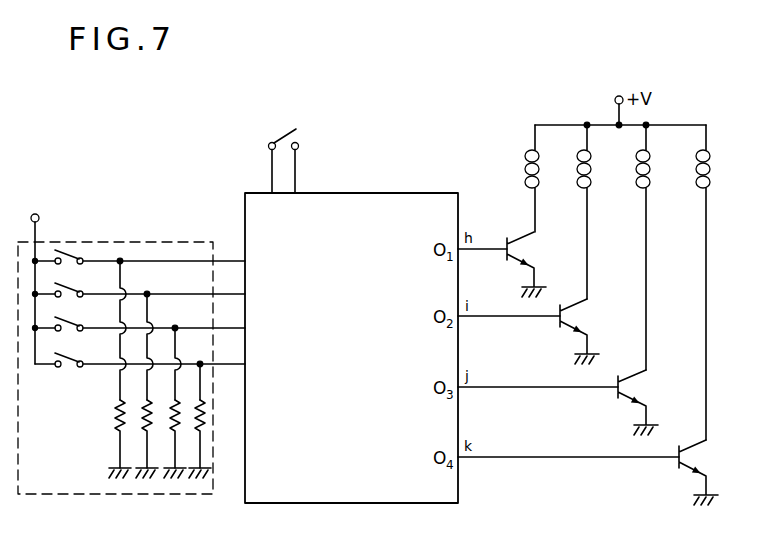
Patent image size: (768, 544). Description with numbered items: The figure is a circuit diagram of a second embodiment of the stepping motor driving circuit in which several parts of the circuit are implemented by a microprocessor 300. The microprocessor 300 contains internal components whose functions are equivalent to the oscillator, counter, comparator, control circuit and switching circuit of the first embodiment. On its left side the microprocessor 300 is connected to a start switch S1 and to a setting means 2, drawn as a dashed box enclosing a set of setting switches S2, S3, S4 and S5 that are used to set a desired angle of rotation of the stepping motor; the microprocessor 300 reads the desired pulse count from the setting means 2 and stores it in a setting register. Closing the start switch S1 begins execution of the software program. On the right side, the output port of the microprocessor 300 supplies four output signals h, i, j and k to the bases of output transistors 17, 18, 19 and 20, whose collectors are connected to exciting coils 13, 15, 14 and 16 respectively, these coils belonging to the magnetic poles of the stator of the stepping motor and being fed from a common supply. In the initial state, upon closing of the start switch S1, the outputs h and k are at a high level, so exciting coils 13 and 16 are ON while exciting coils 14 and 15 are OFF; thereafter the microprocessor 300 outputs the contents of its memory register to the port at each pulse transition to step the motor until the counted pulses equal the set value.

The setting means 2 is at (108, 243).
The microprocessor 300 is at (383, 196).
The exciting coil 13 is at (527, 151).
The exciting coil 14 is at (581, 151).
The exciting coil 15 is at (639, 151).
The exciting coil 16 is at (702, 151).
The output transistor 17 is at (520, 238).
The output transistor 18 is at (574, 305).
The output transistor 19 is at (632, 376).
The output transistor 20 is at (692, 446).
The start switch S1 is at (282, 120).
The setting switch S2 is at (66, 360).
The setting switch S3 is at (66, 324).
The setting switch S4 is at (66, 290).
The setting switch S5 is at (66, 257).